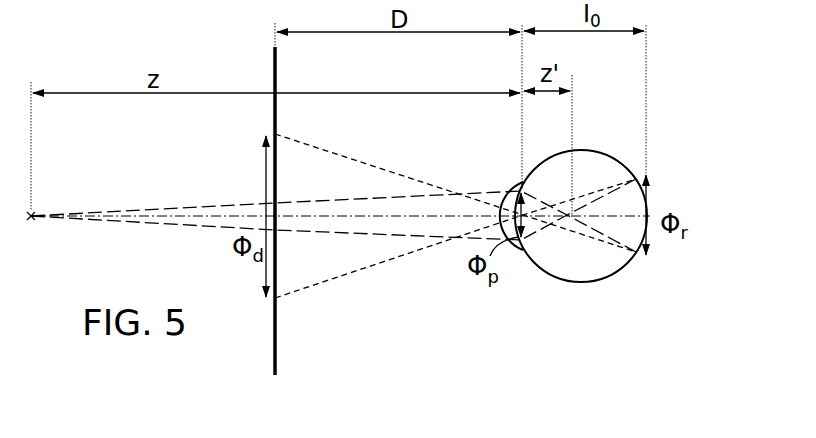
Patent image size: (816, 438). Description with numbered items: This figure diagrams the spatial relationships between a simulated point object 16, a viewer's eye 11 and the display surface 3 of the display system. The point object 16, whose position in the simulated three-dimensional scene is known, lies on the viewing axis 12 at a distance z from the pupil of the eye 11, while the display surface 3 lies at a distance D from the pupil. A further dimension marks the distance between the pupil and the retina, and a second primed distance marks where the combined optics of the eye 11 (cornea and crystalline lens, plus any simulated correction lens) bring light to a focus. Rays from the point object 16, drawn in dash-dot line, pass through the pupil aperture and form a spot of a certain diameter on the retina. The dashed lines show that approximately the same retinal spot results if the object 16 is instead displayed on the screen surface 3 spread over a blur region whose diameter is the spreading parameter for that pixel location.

The display surface 3 is at (277, 350).
The viewer's eye 11 is at (607, 278).
The viewing axis 12 is at (199, 227).
The point object 16 is at (28, 224).